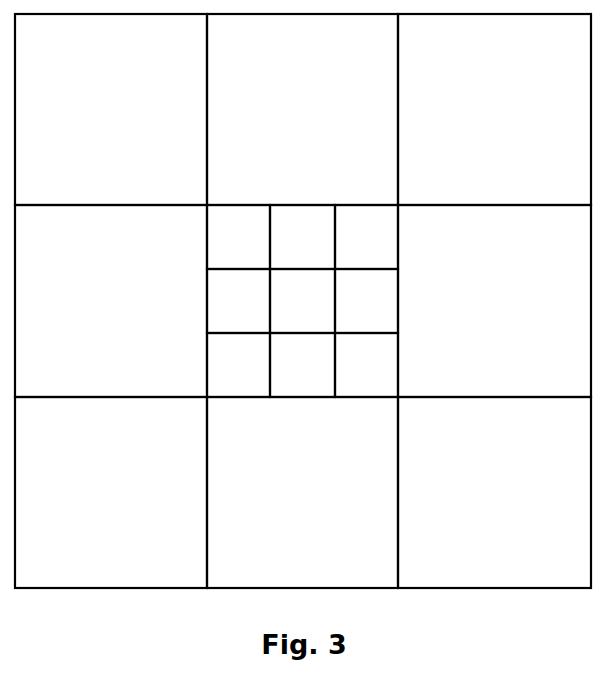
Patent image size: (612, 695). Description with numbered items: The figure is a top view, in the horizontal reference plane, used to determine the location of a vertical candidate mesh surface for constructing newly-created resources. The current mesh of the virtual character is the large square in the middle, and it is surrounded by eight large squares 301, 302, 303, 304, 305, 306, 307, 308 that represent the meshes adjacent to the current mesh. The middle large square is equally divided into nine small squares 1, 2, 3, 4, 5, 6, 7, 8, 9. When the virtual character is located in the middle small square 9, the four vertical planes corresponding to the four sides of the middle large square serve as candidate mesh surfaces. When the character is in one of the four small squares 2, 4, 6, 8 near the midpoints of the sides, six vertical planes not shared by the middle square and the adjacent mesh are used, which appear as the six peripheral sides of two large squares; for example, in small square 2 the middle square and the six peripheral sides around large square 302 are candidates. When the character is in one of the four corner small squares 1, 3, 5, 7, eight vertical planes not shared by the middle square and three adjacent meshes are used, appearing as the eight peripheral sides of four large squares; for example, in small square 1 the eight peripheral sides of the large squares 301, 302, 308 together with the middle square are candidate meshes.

The large square 301 is at (111, 109).
The large square 302 is at (302, 109).
The large square 303 is at (494, 109).
The large square 304 is at (494, 301).
The large square 305 is at (494, 492).
The large square 306 is at (302, 492).
The large square 307 is at (111, 492).
The large square 308 is at (111, 301).
The small square 1 is at (238, 237).
The small square 2 is at (302, 237).
The small square 3 is at (366, 237).
The small square 4 is at (366, 301).
The small square 5 is at (366, 365).
The small square 6 is at (302, 365).
The small square 7 is at (238, 365).
The small square 8 is at (238, 301).
The small square 9 is at (302, 301).